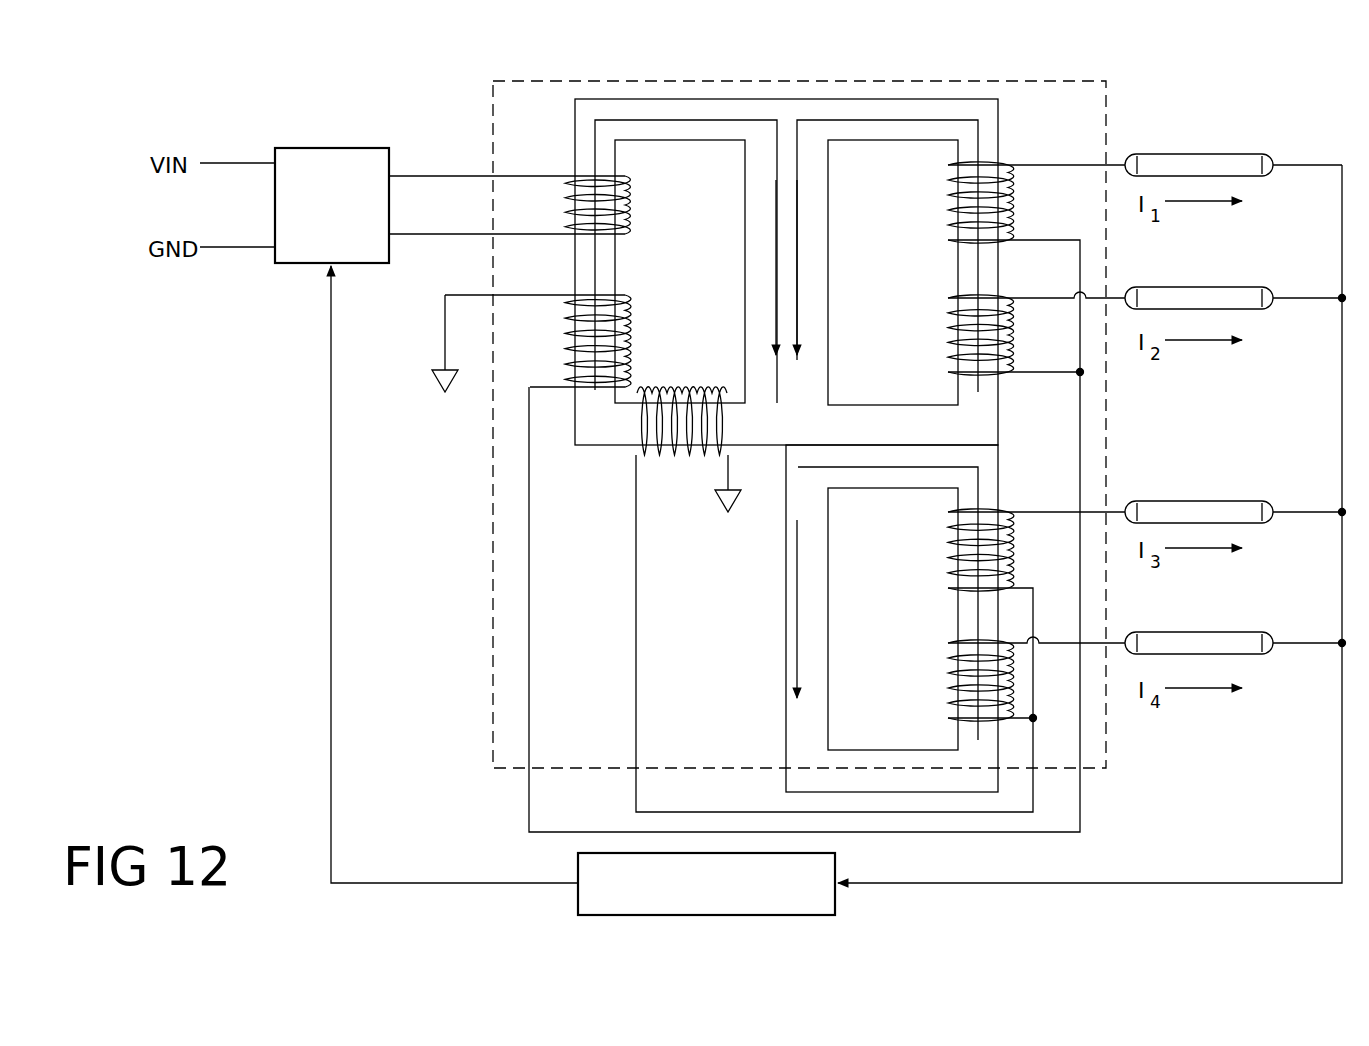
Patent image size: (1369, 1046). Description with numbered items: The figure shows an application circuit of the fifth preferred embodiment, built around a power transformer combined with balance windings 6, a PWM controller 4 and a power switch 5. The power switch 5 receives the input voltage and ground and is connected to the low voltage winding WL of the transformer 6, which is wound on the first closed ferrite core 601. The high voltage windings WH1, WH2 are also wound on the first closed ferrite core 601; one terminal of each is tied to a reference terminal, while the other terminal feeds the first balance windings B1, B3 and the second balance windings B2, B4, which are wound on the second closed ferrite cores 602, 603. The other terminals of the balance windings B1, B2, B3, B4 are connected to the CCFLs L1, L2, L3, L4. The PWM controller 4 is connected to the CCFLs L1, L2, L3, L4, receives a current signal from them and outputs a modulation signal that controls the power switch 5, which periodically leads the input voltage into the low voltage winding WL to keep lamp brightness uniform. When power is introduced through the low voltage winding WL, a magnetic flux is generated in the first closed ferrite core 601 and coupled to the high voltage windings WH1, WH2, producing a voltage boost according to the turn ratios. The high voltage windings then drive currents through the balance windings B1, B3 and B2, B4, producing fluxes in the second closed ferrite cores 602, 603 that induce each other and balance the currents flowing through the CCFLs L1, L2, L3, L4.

The PWM controller 4 is at (838, 868).
The power switch 5 is at (332, 148).
The power transformer combined with balance windings 6 is at (826, 96).
The first closed ferrite core 601 is at (690, 96).
The second closed ferrite core 602 is at (918, 96).
The second closed ferrite core 603 is at (985, 755).
The low voltage winding WL is at (568, 205).
The high voltage winding WH1 is at (568, 360).
The high voltage winding WH2 is at (689, 469).
The first balance winding B1 is at (1003, 195).
The second balance winding B2 is at (1003, 310).
The first balance winding B3 is at (1003, 525).
The second balance winding B4 is at (1003, 675).
The CCFL L1 is at (1233, 153).
The CCFL L2 is at (1235, 313).
The CCFL L3 is at (1235, 500).
The CCFL L4 is at (1235, 659).